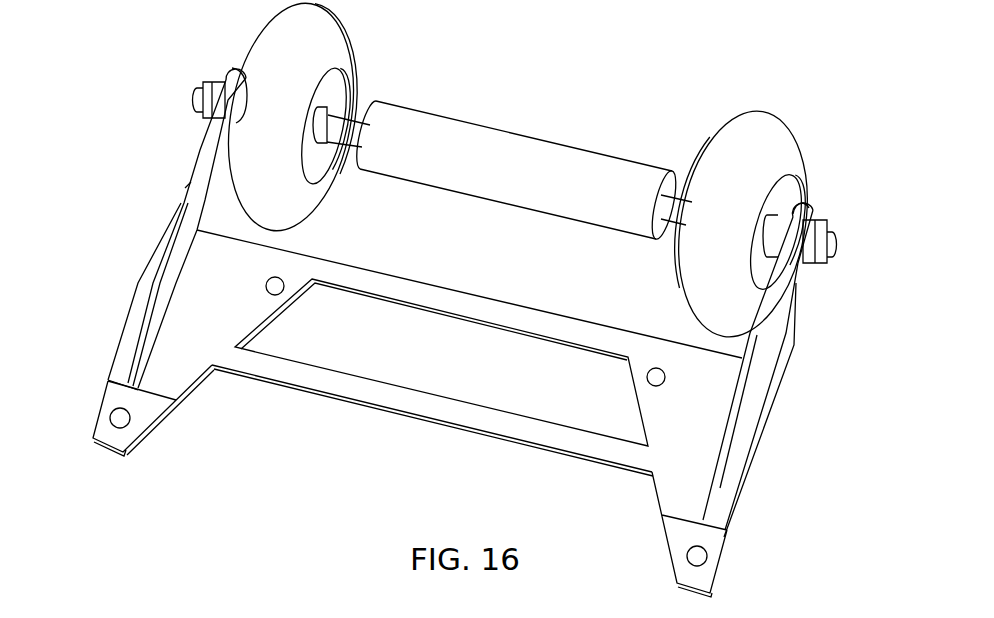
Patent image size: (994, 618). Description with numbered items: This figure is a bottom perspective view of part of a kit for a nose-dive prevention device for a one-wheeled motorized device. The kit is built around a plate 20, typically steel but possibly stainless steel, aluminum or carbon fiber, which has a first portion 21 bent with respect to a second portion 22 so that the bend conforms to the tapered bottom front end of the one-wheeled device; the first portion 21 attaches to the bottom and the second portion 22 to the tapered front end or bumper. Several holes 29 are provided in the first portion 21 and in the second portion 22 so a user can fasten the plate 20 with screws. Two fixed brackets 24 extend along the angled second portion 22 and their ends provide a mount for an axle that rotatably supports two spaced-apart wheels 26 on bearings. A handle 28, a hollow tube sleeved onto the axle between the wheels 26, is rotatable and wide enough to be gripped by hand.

The plate 20 is at (672, 485).
The first portion 21 is at (145, 412).
The second portion 22 is at (187, 375).
The brackets 24 is at (200, 157).
The wheels 26 is at (775, 133).
The handle 28 is at (502, 152).
The holes 29 is at (267, 283).